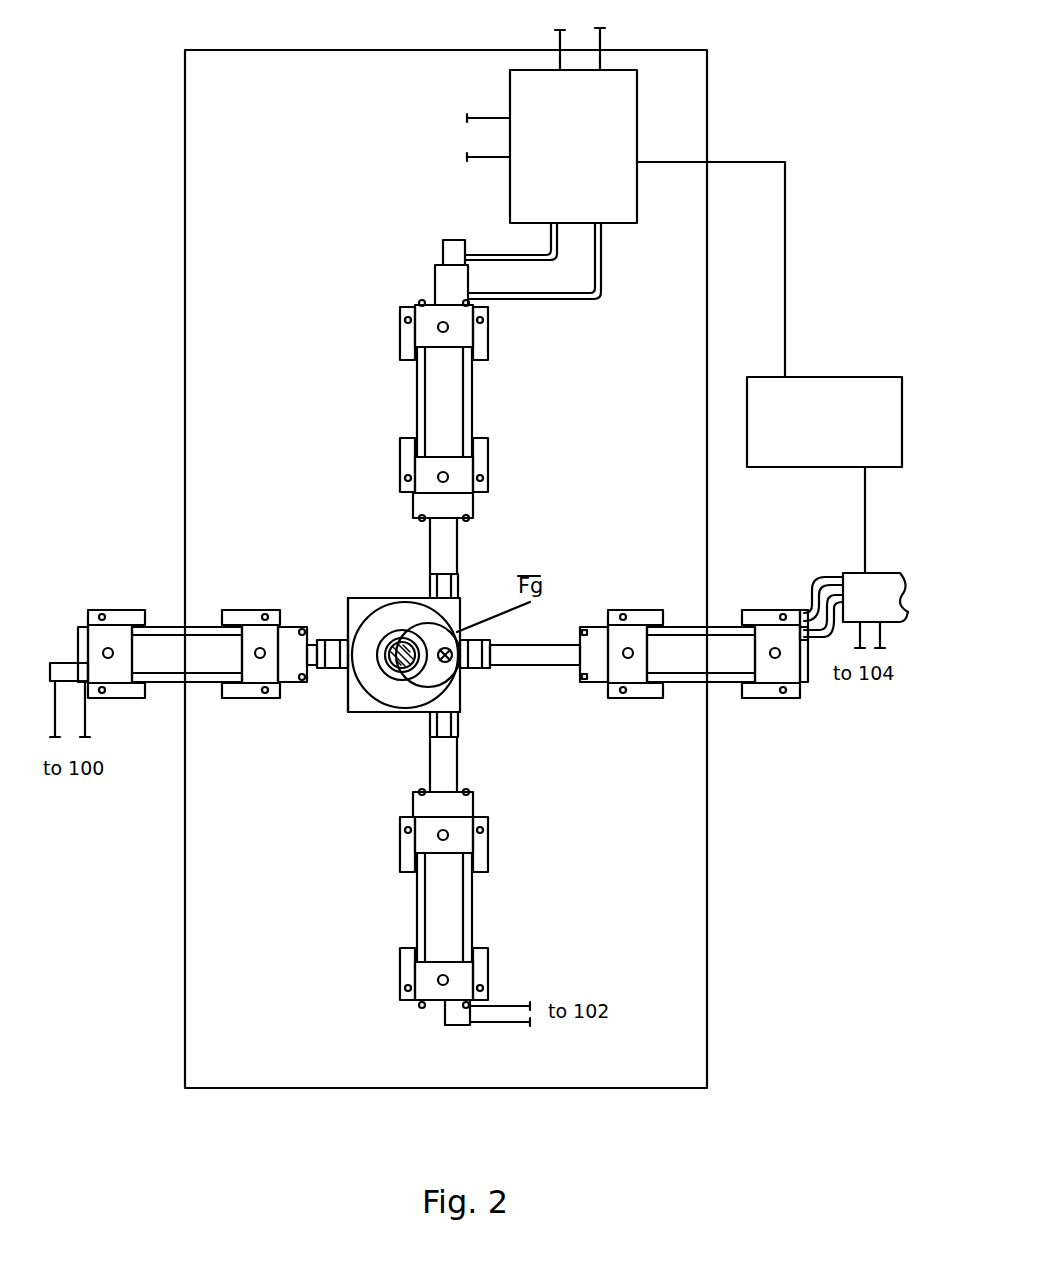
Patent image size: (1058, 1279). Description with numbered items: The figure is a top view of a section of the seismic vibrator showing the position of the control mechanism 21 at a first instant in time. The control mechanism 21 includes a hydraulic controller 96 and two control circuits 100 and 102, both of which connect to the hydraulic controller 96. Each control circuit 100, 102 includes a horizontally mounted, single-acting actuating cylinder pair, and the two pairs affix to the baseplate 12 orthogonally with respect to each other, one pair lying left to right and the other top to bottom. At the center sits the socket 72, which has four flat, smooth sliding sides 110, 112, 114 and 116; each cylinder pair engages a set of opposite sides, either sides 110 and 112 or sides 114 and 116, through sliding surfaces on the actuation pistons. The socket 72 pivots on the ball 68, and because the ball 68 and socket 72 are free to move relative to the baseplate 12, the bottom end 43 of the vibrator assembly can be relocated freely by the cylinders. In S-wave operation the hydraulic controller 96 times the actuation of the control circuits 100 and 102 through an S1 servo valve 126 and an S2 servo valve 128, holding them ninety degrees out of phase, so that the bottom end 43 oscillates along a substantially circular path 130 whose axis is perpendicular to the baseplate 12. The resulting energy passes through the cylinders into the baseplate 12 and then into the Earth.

The baseplate 12 is at (707, 1010).
The control mechanism 21 is at (489, 1128).
The bottom end 43 is at (402, 630).
The ball 68 is at (387, 637).
The socket 72 is at (355, 713).
The hydraulic controller 96 is at (807, 377).
The control circuit 100 is at (878, 548).
The control circuit 102 is at (660, 132).
The side 110 is at (372, 712).
The side 112 is at (387, 627).
The side 114 is at (347, 610).
The side 116 is at (460, 698).
The S1 servo valve 126 is at (895, 622).
The S2 servo valve 128 is at (637, 198).
The circular path 130 is at (467, 672).